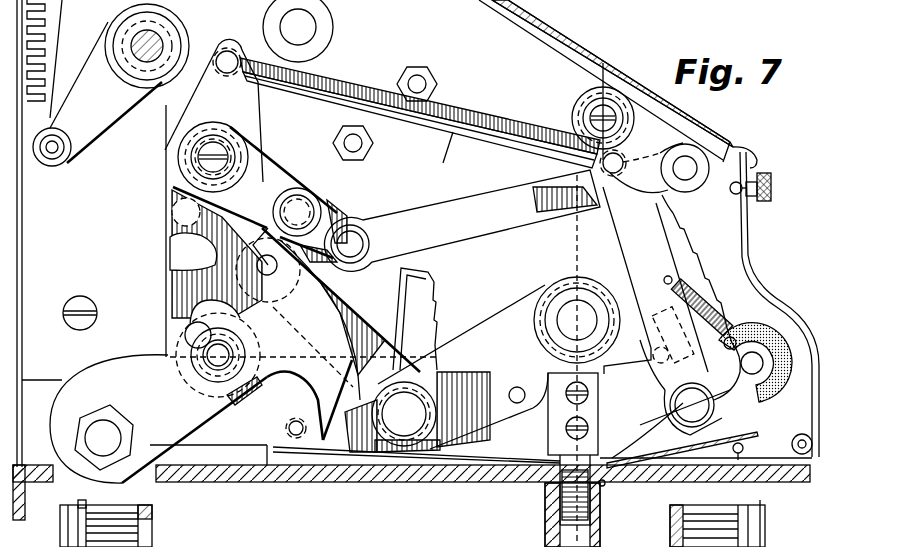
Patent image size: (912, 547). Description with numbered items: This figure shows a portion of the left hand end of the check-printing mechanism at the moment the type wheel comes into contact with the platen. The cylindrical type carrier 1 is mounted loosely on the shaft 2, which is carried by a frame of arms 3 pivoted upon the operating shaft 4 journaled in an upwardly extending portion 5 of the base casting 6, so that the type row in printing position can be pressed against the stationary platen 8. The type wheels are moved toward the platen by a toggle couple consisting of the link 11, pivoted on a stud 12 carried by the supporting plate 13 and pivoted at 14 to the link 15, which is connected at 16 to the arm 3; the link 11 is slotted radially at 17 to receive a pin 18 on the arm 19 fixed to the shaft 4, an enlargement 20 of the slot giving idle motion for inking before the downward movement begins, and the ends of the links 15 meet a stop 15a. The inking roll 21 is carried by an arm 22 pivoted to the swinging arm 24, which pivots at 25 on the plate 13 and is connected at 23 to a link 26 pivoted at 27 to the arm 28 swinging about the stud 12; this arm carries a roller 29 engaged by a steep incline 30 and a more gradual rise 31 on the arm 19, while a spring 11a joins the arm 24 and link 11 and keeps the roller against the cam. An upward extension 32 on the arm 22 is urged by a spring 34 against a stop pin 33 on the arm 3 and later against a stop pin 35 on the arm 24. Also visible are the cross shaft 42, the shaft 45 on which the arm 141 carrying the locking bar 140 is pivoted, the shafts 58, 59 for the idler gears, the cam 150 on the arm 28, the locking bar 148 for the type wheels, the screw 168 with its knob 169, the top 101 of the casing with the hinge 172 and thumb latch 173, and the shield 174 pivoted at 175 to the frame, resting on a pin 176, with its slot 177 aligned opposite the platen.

The cylindrical type carrier 1 is at (514, 318).
The shaft 2 is at (577, 360).
The arm 3 is at (463, 405).
The operating shaft 4 is at (108, 437).
The upwardly extending portion 5 is at (42, 397).
The base casting 6 is at (410, 474).
The stationary platen 8 is at (536, 502).
The link 11 is at (250, 120).
The spring 11a is at (455, 159).
The stud 12 is at (224, 152).
The supporting plate 13 is at (183, 233).
The pivot 14 is at (268, 272).
The link 15 is at (355, 370).
The stop 15a is at (172, 263).
The connection 16 is at (406, 417).
The radial slot 17 is at (200, 300).
The pin 18 is at (222, 363).
The arm 19 is at (158, 419).
The enlargement of the slot 20 is at (187, 328).
The inking roll 21 is at (758, 398).
The arm 22 is at (682, 440).
The pivot 23 is at (690, 180).
The swinging arm 24 is at (611, 176).
The pivot 25 is at (598, 116).
The link 26 is at (462, 220).
The pivot 27 is at (352, 246).
The arm 28 is at (286, 167).
The roller 29 is at (295, 195).
The steep incline 30 is at (333, 433).
The gradual rise 31 is at (340, 312).
The upward extension 32 is at (663, 316).
The stop pin 33 is at (517, 387).
The spring 34 is at (714, 306).
The stop pin 35 is at (660, 375).
The cross shaft 42 is at (312, 38).
The shaft 45 is at (146, 52).
The shaft 58 is at (356, 143).
The shaft 59 is at (425, 86).
The top of the casing 101 is at (725, 138).
The locking bar 140 is at (62, 160).
The arm 141 is at (106, 92).
The locking bar 148 is at (402, 290).
The cam 150 is at (436, 298).
The screw 168 is at (573, 419).
The knob 169 is at (588, 398).
The hinge 172 is at (797, 444).
The thumb latch 173 is at (771, 190).
The shield 174 is at (468, 466).
The pivot 175 is at (296, 421).
The pin 176 is at (751, 458).
The slot 177 is at (604, 487).